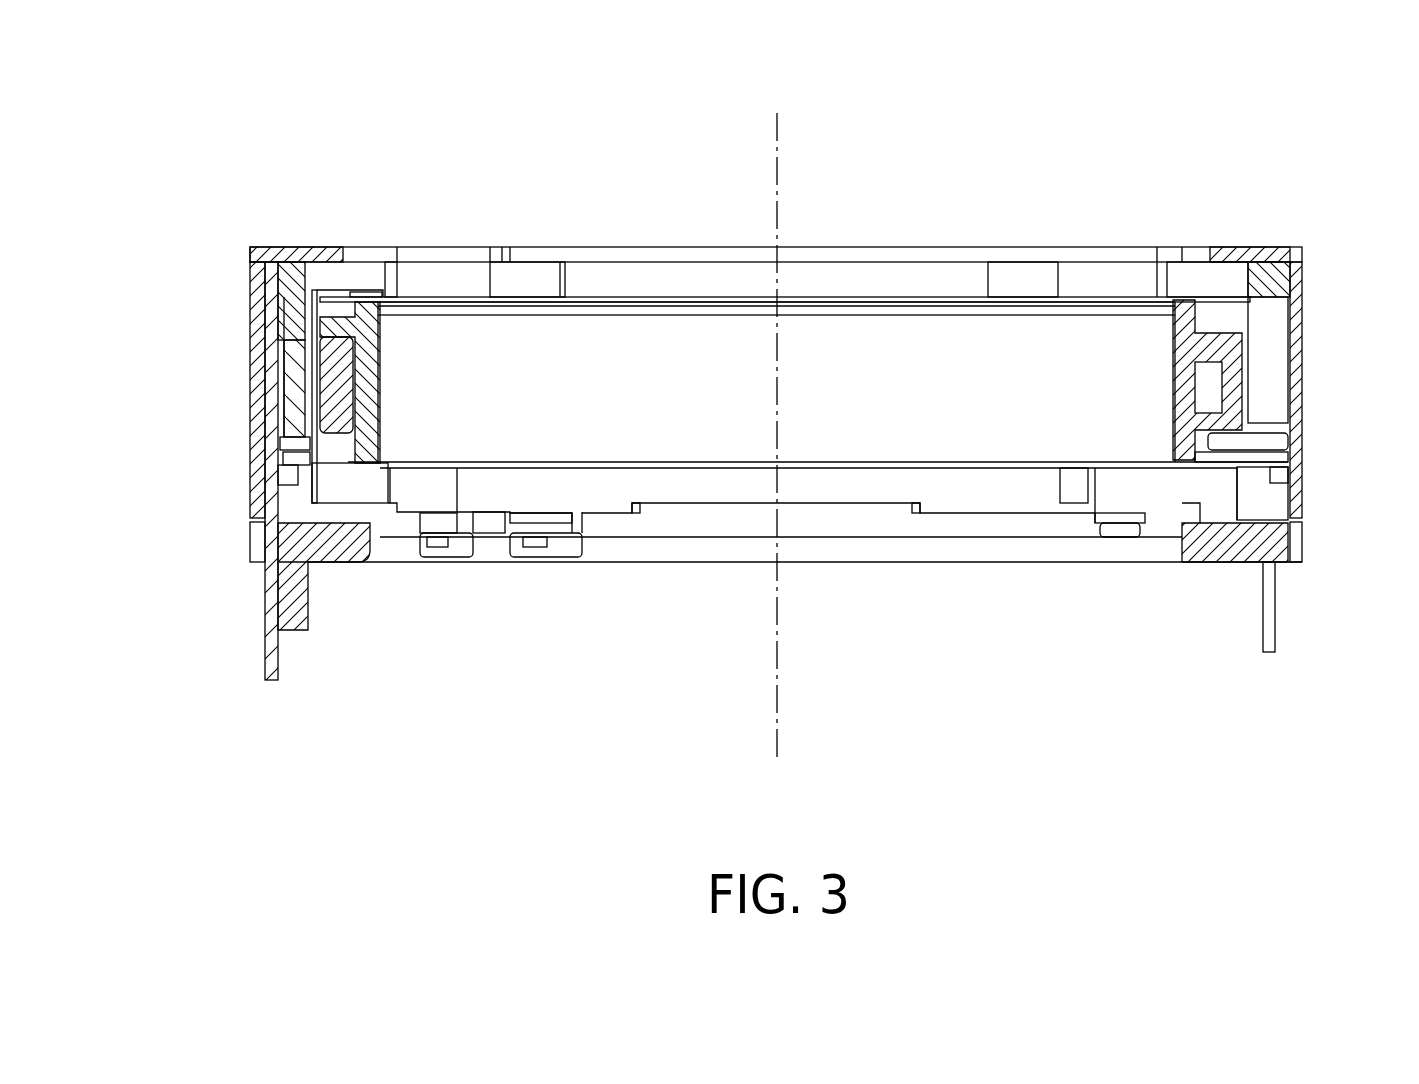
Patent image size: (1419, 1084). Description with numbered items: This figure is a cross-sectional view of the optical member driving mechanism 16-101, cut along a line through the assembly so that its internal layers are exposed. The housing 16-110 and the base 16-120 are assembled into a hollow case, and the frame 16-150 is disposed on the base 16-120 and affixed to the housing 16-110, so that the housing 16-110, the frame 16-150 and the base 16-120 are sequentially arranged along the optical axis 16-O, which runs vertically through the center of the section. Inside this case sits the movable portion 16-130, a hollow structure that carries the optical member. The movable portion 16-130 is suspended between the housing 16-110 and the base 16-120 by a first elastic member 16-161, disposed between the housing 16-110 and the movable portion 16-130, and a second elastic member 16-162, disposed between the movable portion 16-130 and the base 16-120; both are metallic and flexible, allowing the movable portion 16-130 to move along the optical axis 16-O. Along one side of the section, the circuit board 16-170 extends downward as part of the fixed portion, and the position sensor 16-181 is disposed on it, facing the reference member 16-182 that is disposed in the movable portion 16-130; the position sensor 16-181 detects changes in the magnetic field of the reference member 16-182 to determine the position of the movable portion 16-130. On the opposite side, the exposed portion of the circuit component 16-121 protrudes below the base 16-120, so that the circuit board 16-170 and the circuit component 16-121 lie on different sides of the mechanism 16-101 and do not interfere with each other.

The optical member driving mechanism 16-101 is at (197, 121).
The optical axis 16-O is at (778, 420).
The housing 16-110 is at (273, 250).
The base 16-120 is at (681, 545).
The circuit component 16-121 is at (1275, 608).
The movable portion 16-130 is at (645, 358).
The frame 16-150 is at (292, 287).
The first elastic member 16-161 is at (417, 297).
The second elastic member 16-162 is at (412, 462).
The circuit board 16-170 is at (268, 603).
The position sensor 16-181 is at (292, 360).
The reference member 16-182 is at (328, 412).